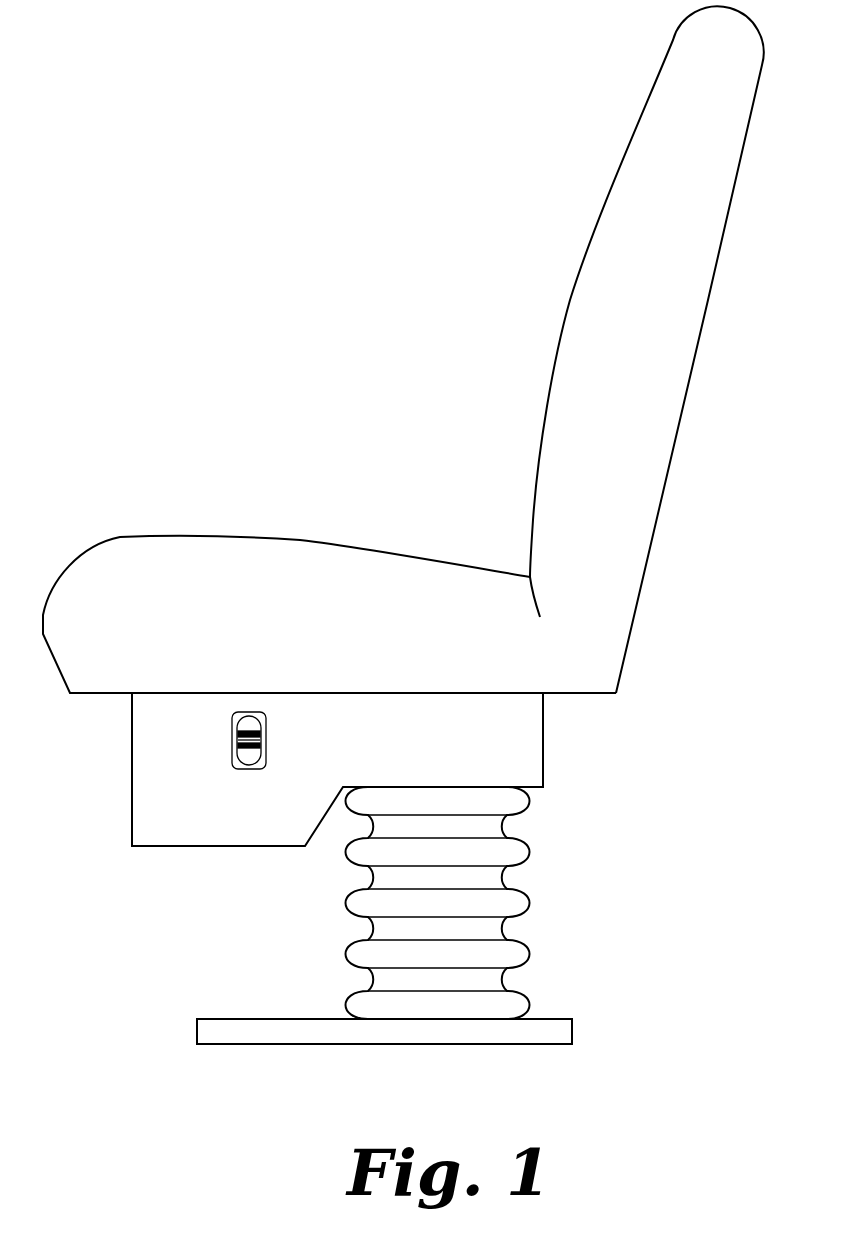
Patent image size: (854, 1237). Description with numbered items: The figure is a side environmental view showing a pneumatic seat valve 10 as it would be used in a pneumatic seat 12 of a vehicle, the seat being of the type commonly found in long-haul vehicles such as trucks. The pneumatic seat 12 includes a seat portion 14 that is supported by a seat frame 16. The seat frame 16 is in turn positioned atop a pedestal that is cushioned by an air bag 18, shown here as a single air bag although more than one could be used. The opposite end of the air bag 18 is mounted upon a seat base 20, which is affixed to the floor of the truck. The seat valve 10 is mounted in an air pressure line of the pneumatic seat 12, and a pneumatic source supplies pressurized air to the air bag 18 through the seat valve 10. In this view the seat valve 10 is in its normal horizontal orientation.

The pneumatic seat valve 10 is at (417, 525).
The pneumatic seat 12 is at (455, 448).
The seat portion 14 is at (678, 437).
The seat frame 16 is at (545, 740).
The air bag 18 is at (534, 903).
The seat base 20 is at (573, 1028).